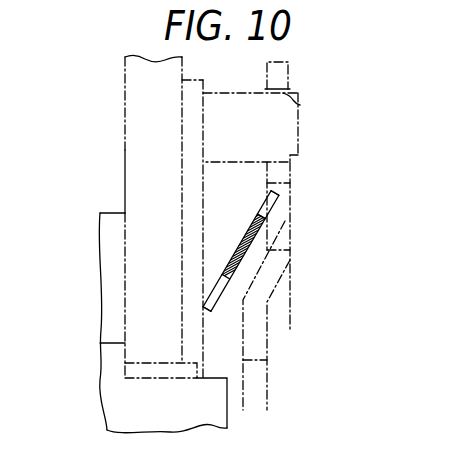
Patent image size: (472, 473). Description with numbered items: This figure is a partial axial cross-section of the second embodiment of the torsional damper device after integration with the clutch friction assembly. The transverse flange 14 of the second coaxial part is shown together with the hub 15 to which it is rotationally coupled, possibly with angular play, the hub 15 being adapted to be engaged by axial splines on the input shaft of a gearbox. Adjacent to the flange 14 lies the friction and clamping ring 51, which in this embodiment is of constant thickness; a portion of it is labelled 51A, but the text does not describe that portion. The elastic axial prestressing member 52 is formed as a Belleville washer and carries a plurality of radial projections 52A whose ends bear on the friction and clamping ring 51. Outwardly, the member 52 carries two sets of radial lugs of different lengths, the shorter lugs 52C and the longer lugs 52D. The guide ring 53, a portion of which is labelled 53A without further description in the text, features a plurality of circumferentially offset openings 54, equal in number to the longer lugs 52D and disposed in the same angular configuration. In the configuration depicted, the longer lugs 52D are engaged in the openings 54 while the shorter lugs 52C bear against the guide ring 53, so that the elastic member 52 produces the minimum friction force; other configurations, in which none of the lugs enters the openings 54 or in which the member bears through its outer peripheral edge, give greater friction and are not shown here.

The transverse flange 14 is at (142, 168).
The hub 15 is at (227, 415).
The friction and clamping ring 51 is at (210, 77).
The side face of holder block 51A is at (298, 134).
The elastic axial prestressing member 52 is at (234, 289).
The radial projections 52A is at (209, 312).
The shorter radial lugs 52C is at (263, 222).
The longer radial lugs 52D is at (279, 210).
The guide ring 53 is at (300, 67).
The ledge of stop block 53A is at (300, 105).
The openings 54 is at (273, 250).